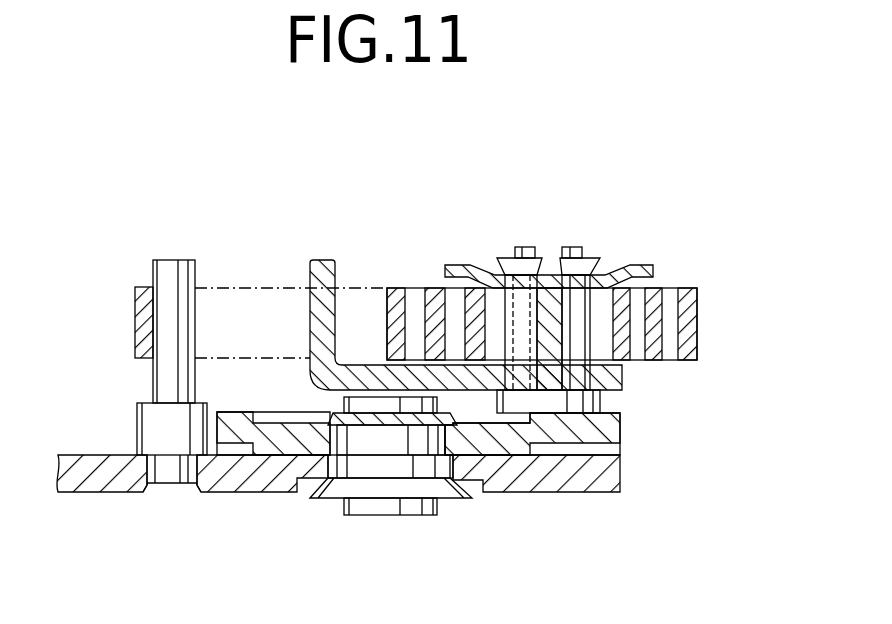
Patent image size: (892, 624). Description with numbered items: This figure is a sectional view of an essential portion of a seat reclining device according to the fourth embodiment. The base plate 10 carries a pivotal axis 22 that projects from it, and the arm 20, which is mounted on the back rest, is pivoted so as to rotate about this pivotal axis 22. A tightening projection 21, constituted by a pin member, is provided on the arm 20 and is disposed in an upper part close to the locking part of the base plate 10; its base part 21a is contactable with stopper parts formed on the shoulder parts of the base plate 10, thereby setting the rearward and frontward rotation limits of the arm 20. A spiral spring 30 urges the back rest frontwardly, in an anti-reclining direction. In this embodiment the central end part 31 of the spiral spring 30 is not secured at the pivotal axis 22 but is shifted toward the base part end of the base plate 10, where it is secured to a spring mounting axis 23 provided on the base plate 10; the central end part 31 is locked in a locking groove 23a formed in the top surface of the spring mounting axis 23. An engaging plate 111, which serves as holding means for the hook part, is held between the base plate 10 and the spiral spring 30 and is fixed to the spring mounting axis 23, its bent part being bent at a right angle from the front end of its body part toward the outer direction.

The base plate 10 is at (610, 433).
The arm 20 is at (107, 473).
The tightening projection 21 is at (173, 258).
The base part of tightening projection 21a is at (137, 437).
The pivotal axis 22 is at (380, 440).
The spring mounting axis 23 is at (590, 398).
The locking groove 23a is at (548, 330).
The spiral spring 30 is at (700, 315).
The central end part of spiral spring 31 is at (549, 300).
The engaging plate 111 is at (322, 260).